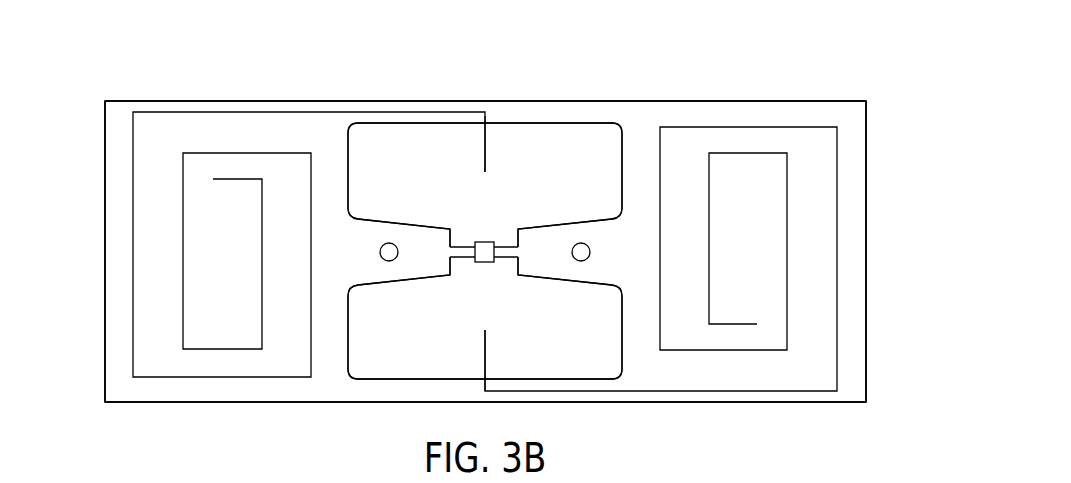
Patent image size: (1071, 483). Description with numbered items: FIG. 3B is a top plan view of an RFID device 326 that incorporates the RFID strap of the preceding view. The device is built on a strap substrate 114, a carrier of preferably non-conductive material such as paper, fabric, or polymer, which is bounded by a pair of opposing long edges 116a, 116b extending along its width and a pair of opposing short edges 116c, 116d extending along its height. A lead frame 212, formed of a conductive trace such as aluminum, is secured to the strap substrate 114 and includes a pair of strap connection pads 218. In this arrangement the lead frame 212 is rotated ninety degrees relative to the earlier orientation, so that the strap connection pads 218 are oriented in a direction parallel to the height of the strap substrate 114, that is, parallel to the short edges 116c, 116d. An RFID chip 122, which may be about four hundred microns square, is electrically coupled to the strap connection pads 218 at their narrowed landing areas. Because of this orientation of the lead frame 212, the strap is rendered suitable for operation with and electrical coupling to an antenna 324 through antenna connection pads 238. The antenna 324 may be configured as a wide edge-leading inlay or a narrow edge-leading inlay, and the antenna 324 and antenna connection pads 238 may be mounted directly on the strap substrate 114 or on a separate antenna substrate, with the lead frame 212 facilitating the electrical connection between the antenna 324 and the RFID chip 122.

The strap substrate 114 is at (121, 387).
The long edge 116a is at (738, 101).
The long edge 116b is at (735, 404).
The short edge 116c is at (105, 253).
The short edge 116d is at (867, 253).
The RFID chip 122 is at (483, 242).
The lead frame 212 is at (619, 103).
The strap connection pad 218 is at (563, 135).
The antenna connection pad 238 is at (486, 147).
The antenna 324 is at (253, 112).
The RFID tag 326 is at (878, 93).